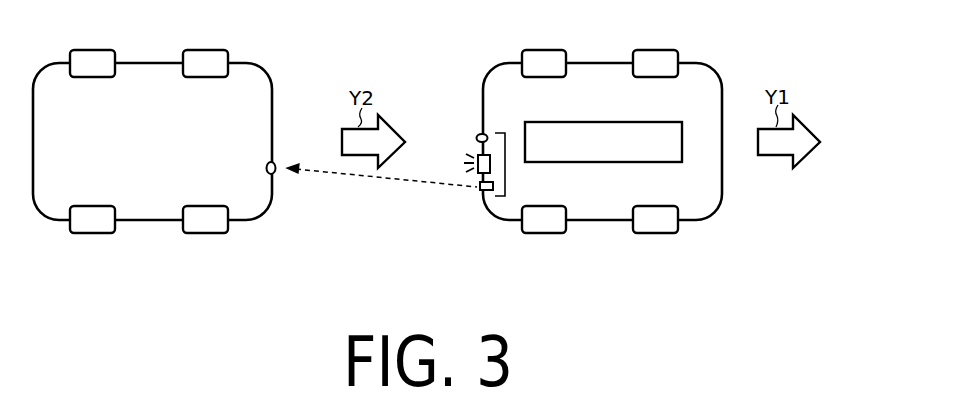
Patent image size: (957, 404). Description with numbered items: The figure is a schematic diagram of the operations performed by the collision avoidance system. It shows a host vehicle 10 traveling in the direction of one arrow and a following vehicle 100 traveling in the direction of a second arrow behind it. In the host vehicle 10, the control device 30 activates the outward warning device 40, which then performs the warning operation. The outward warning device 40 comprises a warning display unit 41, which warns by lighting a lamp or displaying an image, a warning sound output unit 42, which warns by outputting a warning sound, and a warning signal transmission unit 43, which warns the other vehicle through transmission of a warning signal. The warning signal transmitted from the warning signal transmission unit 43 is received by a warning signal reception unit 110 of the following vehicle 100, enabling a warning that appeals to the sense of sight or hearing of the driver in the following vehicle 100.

The following vehicle 100 is at (146, 63).
The warning signal reception unit 110 is at (273, 175).
The host vehicle 10 is at (593, 63).
The control device 30 is at (590, 122).
The outward warning device 40 is at (505, 160).
The warning display unit 41 is at (478, 136).
The warning sound output unit 42 is at (478, 157).
The warning signal transmission unit 43 is at (483, 191).